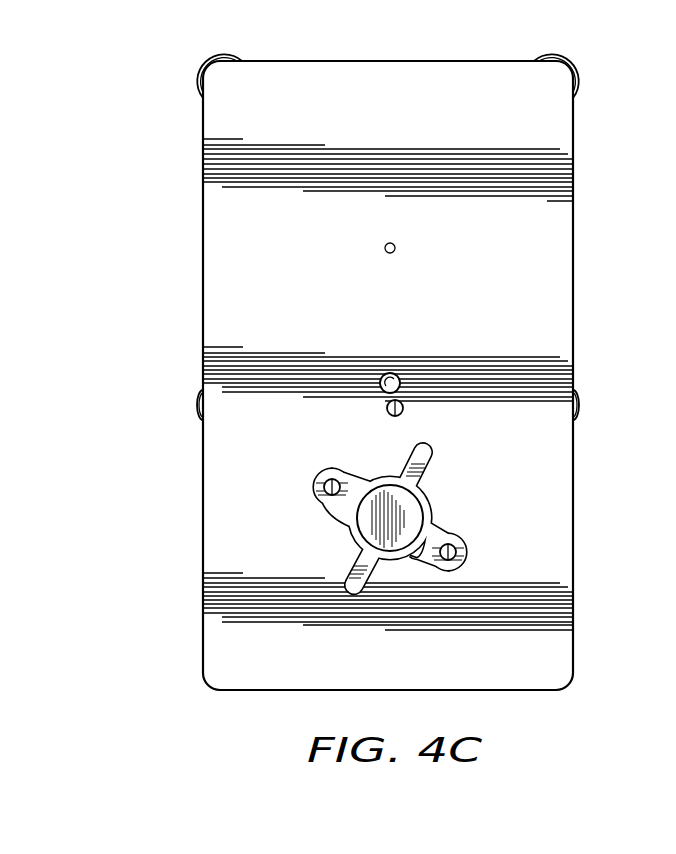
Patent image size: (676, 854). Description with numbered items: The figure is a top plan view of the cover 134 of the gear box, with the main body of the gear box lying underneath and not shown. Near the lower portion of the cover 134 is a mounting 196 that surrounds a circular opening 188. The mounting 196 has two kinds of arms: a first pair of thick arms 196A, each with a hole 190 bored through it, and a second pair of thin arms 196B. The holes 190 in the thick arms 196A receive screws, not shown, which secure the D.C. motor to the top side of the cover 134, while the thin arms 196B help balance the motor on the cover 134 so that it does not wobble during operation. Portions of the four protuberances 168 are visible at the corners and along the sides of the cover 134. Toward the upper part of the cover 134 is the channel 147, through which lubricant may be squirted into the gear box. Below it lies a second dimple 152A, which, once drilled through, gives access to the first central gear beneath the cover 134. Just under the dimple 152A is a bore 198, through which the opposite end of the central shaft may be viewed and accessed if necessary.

The cover 134 is at (562, 266).
The channel 147 is at (384, 250).
The second dimple 152A is at (392, 373).
The protuberances 168 is at (204, 68).
The circular opening 188 is at (352, 537).
The holes 190 is at (318, 478).
The mounting 196 is at (426, 489).
The first pair of thick arms 196A is at (320, 505).
The second pair of thin arms 196B is at (430, 452).
The bore 198 is at (386, 409).